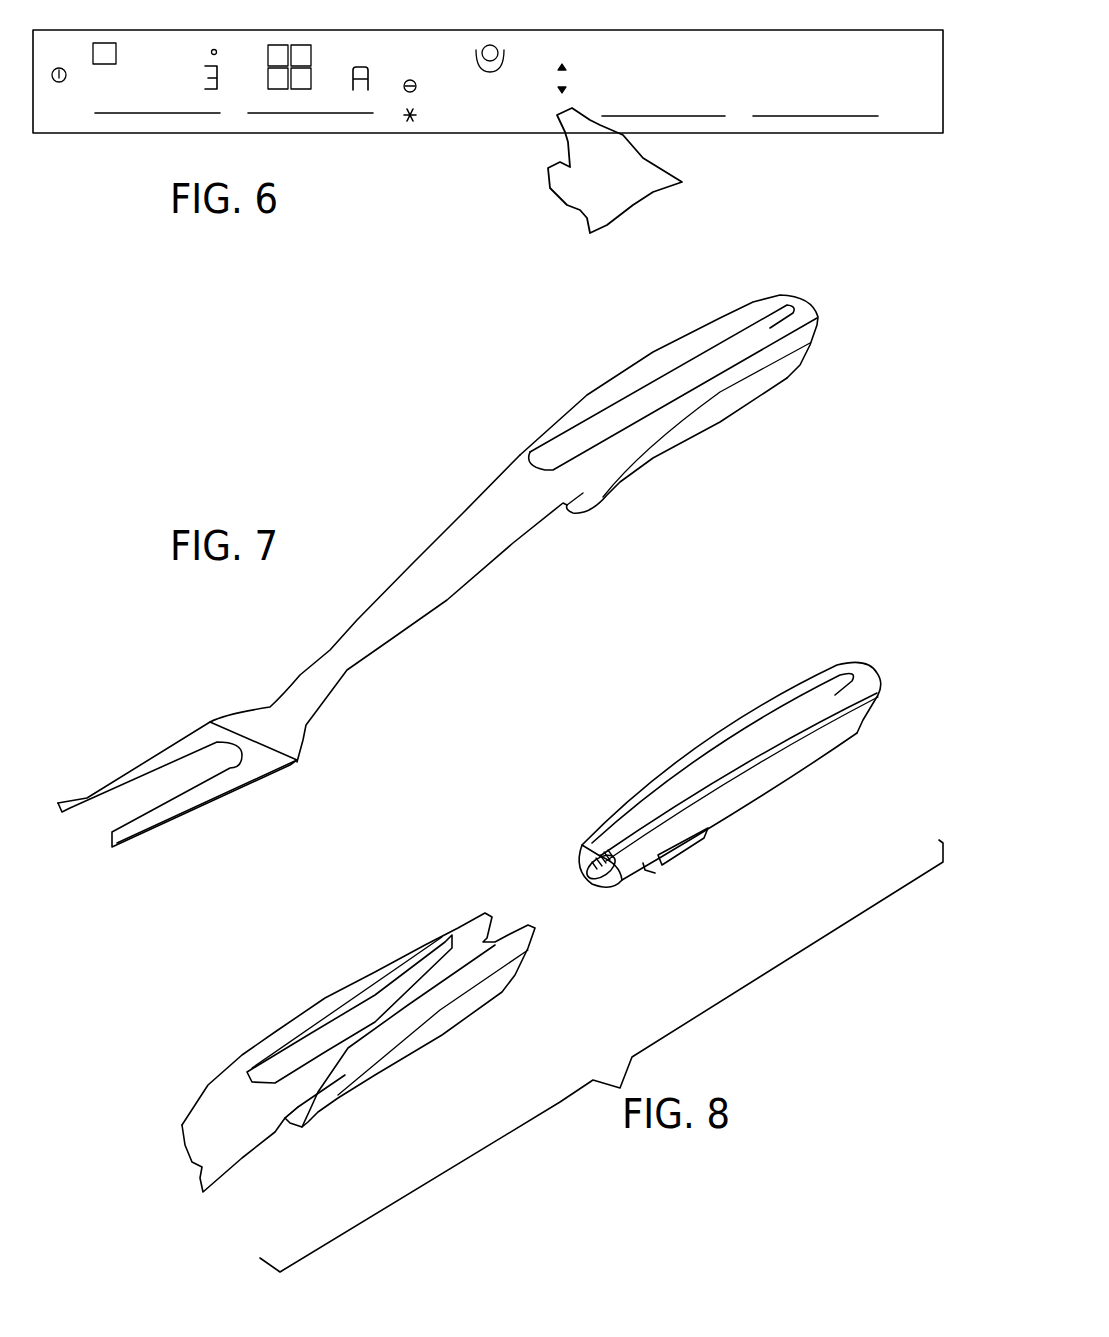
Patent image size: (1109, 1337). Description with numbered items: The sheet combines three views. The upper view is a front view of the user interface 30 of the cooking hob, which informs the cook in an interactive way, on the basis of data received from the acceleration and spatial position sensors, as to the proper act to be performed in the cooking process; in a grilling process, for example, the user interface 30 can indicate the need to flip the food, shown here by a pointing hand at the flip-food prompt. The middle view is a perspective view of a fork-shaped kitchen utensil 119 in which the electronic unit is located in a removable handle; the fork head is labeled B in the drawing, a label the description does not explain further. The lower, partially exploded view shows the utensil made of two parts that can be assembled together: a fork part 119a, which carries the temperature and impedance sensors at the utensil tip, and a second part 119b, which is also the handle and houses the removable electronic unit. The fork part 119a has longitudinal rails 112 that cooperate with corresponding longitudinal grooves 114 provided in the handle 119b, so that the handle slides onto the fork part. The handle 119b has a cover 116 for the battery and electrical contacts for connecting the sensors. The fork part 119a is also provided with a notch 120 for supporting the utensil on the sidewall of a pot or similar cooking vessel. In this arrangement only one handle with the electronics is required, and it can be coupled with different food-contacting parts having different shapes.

In FIG. 6, the user interface 30 is at (840, 173).
In FIG. 7, the fork head B is at (207, 735).
In FIG. 7, the handle 119 is at (490, 448).
In FIG. 8, the handle 119 is at (549, 895).
In FIG. 8, the first handle half 119a is at (443, 1063).
In FIG. 8, the second handle half 119b is at (833, 797).
In FIG. 8, the longitudinal rails 112 is at (372, 972).
In FIG. 8, the longitudinal grooves 114 is at (790, 750).
In FIG. 8, the cover 116 is at (685, 857).
In FIG. 8, the notch 120 is at (295, 1124).